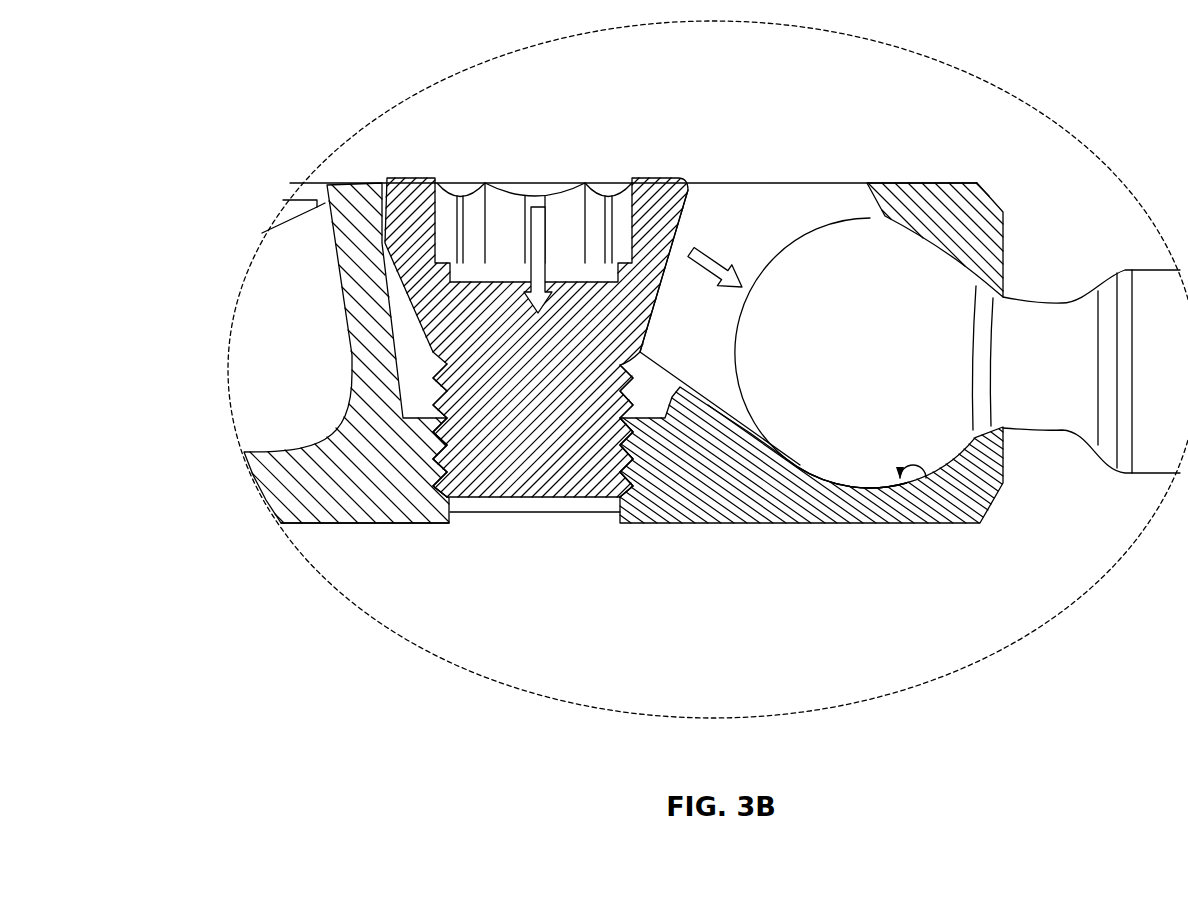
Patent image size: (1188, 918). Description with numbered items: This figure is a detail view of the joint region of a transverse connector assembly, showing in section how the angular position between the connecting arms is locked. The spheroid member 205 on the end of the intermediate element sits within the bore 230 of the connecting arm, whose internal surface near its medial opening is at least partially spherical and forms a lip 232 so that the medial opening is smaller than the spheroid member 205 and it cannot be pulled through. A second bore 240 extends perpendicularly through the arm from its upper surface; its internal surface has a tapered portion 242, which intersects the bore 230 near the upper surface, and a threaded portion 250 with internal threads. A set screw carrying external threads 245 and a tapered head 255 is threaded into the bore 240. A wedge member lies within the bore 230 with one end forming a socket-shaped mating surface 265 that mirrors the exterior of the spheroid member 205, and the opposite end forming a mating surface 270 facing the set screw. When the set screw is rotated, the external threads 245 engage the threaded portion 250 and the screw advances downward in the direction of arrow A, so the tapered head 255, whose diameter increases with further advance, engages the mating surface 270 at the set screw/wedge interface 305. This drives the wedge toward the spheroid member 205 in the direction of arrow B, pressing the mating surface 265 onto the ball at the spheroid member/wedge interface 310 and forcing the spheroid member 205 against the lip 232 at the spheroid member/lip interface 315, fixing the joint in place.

The spheroid member 205 is at (830, 297).
The bore 230 is at (888, 213).
The lip 232 is at (996, 472).
The bore 240 is at (386, 268).
The tapered portion 242 is at (346, 313).
The external threads 245 is at (427, 504).
The threaded portion 250 is at (438, 470).
The tapered head 255 is at (400, 262).
The mating surface 265 is at (766, 268).
The mating surface 270 is at (692, 222).
The set screw/wedge interface 305 is at (663, 298).
The spheroid member/wedge interface 310 is at (779, 243).
The spheroid member/lip interface 315 is at (928, 478).
The arrow A is at (547, 229).
The arrow B is at (720, 257).